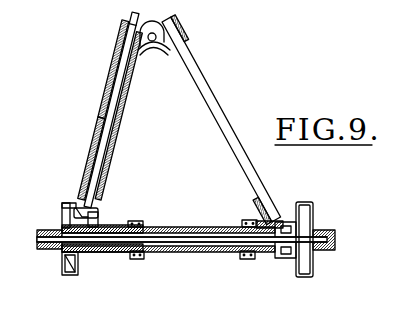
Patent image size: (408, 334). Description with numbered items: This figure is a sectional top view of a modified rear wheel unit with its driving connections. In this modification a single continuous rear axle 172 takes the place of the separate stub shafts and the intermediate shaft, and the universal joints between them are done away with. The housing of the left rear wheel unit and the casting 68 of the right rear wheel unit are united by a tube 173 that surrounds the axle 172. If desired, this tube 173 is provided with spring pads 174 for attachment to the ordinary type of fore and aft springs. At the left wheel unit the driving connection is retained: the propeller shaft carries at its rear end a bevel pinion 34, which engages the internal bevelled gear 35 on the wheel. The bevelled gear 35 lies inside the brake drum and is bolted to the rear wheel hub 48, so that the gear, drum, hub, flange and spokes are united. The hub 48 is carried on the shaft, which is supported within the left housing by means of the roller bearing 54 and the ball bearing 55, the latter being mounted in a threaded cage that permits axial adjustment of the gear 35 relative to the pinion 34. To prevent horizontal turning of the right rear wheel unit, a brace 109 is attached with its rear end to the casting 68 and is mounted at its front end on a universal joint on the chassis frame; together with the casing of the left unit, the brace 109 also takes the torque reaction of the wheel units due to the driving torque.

The bevel pinion 34 is at (98, 222).
The rear wheel hub 48 is at (58, 227).
The internal bevelled gear 35 is at (65, 255).
The roller bearing 54 is at (85, 255).
The ball bearing 55 is at (300, 278).
The casting 68 is at (275, 202).
The brace 109 is at (232, 128).
The continuous rear axle 172 is at (168, 237).
The tube 173 is at (213, 227).
The spring pads 174 is at (242, 257).